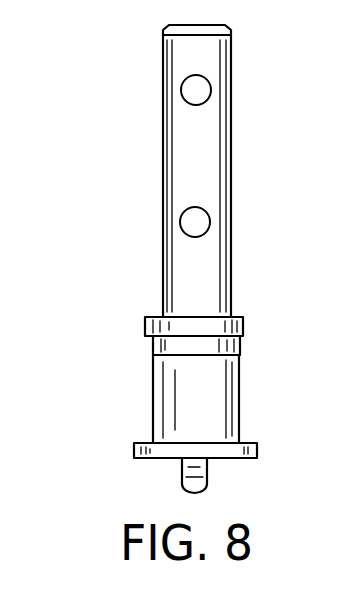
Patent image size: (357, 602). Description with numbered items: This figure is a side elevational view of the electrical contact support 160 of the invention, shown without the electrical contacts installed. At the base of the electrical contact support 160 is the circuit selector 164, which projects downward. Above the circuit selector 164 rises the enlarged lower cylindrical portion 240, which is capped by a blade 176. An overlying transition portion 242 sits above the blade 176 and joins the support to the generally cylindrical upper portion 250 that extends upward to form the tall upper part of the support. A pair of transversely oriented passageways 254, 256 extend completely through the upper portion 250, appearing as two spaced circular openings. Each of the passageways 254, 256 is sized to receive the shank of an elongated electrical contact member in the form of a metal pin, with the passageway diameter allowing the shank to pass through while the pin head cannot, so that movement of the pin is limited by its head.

The electrical contact support 160 is at (158, 210).
The circuit selector 164 is at (183, 484).
The blade 176 is at (153, 345).
The enlarged lower cylindrical portion 240 is at (170, 412).
The transition portion 242 is at (158, 326).
The upper portion 250 is at (172, 154).
The passageway 254 is at (181, 93).
The passageway 256 is at (183, 232).